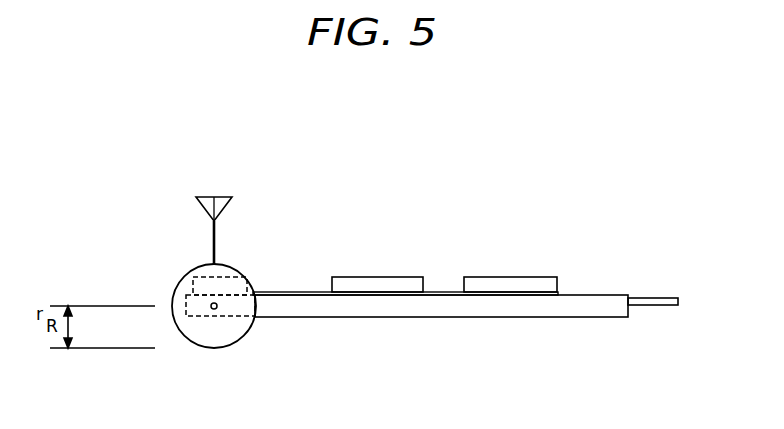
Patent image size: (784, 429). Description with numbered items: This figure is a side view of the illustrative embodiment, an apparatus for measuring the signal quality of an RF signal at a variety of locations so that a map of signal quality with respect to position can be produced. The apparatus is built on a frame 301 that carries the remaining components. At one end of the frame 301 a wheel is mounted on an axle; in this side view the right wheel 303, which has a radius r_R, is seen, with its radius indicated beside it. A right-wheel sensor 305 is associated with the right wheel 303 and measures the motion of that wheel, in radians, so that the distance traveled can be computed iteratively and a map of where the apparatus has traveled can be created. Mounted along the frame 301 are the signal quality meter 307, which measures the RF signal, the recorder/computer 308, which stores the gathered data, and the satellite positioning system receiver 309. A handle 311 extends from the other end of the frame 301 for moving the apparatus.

The frame 301 is at (520, 317).
The right wheel 303 is at (233, 340).
The right-wheel sensor 305 is at (252, 286).
The signal quality meter 307 is at (195, 277).
The recorder/computer 308 is at (373, 277).
The satellite positioning system receiver 309 is at (545, 277).
The handle 311 is at (668, 298).